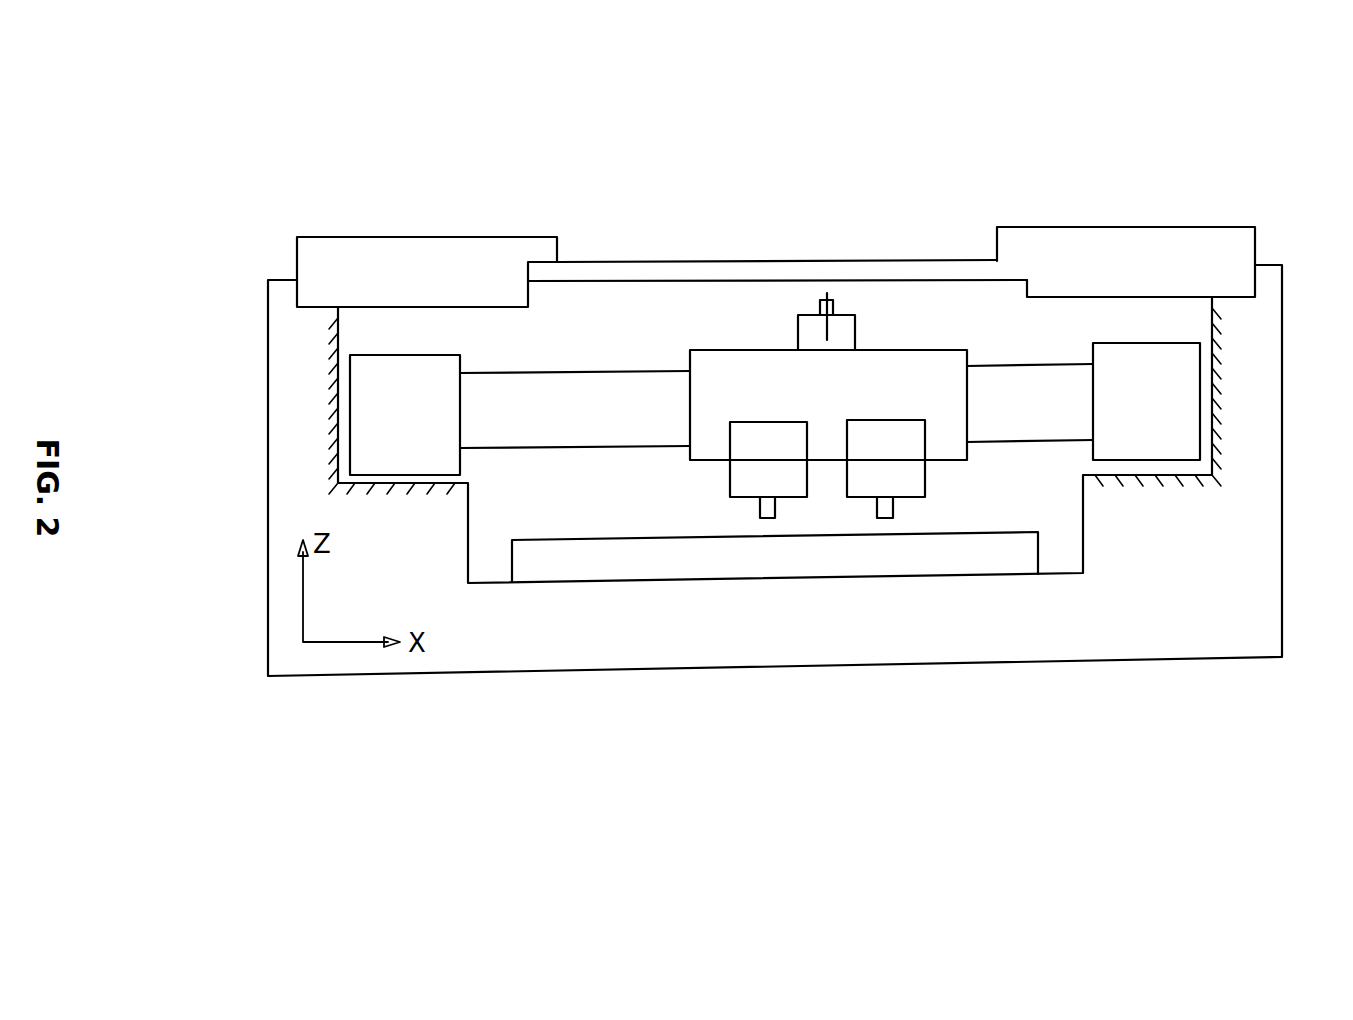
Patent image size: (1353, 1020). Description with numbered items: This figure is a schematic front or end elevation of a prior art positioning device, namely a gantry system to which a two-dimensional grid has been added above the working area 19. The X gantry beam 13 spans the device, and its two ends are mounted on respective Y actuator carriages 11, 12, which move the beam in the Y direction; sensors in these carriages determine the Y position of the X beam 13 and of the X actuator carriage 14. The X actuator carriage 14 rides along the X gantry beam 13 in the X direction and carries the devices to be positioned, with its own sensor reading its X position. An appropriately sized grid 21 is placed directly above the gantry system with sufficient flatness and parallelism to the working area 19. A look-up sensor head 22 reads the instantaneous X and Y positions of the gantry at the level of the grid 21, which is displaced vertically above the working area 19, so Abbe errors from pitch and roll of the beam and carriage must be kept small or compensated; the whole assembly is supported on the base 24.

The Y actuator carriage 11 is at (378, 437).
The Y actuator carriage 12 is at (1170, 410).
The X gantry beam 13 is at (628, 383).
The X actuator carriage 14 is at (717, 387).
The working area 19 is at (568, 545).
The grid 21 is at (927, 273).
The look-up sensor head 22 is at (814, 303).
The base 24 is at (1140, 608).